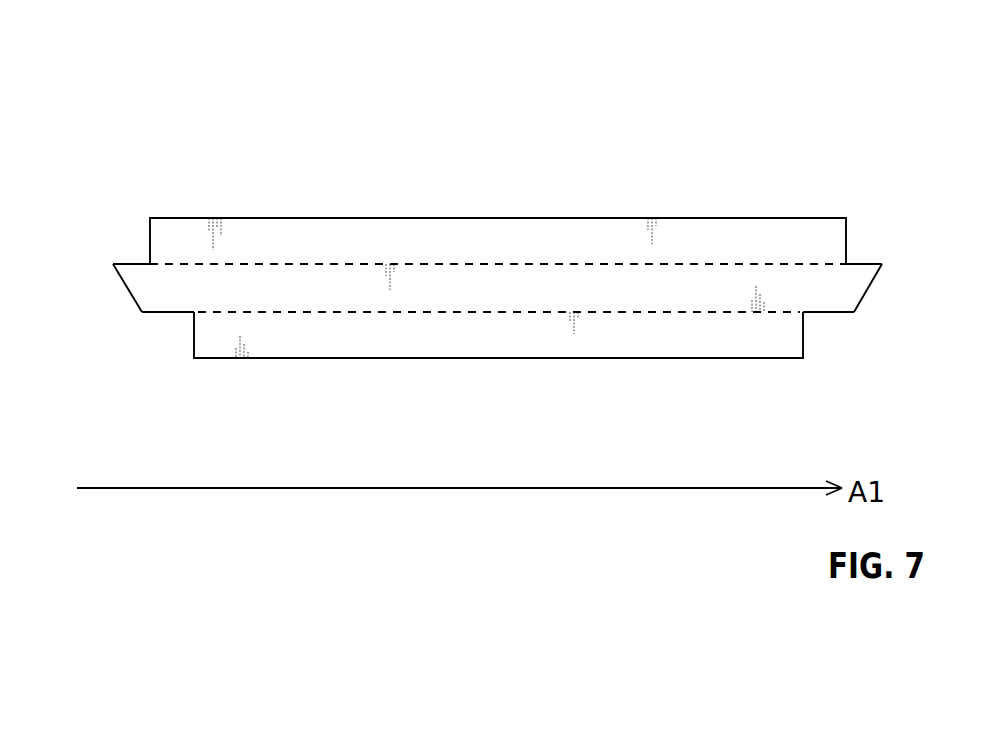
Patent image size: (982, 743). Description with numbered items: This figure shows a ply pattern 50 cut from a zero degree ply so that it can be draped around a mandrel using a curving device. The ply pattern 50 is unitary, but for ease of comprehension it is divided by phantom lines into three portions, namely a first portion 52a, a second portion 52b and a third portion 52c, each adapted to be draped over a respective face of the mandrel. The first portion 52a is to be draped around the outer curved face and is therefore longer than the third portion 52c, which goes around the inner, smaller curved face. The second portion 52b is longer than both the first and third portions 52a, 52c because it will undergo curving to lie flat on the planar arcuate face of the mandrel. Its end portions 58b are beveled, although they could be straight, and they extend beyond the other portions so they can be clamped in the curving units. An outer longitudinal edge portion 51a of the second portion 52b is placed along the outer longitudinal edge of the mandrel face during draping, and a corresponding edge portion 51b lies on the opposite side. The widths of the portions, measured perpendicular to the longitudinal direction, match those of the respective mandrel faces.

The ply pattern 50 is at (487, 206).
The outer longitudinal edge portion 51a is at (302, 264).
The second interface 51b is at (703, 312).
The first portion 52a is at (528, 256).
The second portion 52b is at (528, 306).
The third portion 52c is at (528, 351).
The end portions 58b is at (133, 298).